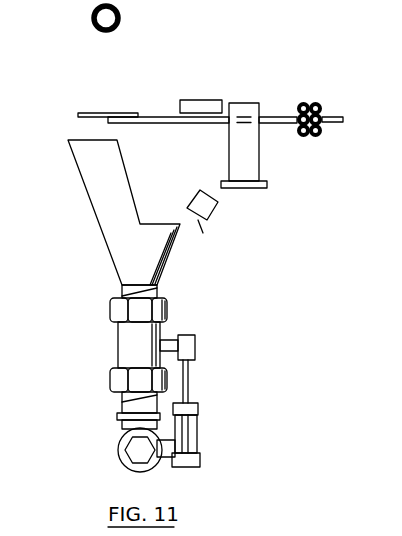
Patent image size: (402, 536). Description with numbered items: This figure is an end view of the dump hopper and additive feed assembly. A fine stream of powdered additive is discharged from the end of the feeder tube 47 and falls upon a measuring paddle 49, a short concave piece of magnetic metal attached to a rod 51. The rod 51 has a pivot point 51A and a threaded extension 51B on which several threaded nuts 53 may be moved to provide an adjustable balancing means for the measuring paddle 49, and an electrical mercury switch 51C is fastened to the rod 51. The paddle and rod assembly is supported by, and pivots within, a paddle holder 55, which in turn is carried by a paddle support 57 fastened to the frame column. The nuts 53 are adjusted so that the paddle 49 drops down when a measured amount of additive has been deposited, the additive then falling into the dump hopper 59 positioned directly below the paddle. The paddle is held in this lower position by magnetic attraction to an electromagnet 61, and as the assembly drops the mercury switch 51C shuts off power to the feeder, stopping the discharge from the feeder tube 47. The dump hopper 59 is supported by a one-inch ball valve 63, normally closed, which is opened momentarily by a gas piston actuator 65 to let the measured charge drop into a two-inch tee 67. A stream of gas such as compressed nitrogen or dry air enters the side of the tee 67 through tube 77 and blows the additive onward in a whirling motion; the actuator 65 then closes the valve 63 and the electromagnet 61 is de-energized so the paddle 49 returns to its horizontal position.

The feeder tube 47 is at (91, 25).
The measuring paddle 49 is at (90, 112).
The rod 51 is at (155, 117).
The pivot point 51A is at (244, 114).
The threaded extension 51B is at (343, 118).
The electrical mercury switch 51C is at (208, 100).
The threaded nuts 53 is at (316, 102).
The paddle holder 55 is at (260, 156).
The paddle support 57 is at (264, 188).
The dump hopper 59 is at (90, 204).
The electromagnet 61 is at (204, 222).
The ball valve 63 is at (117, 334).
The gas piston actuator 65 is at (194, 442).
The tee 67 is at (128, 450).
The tube 77 is at (167, 458).